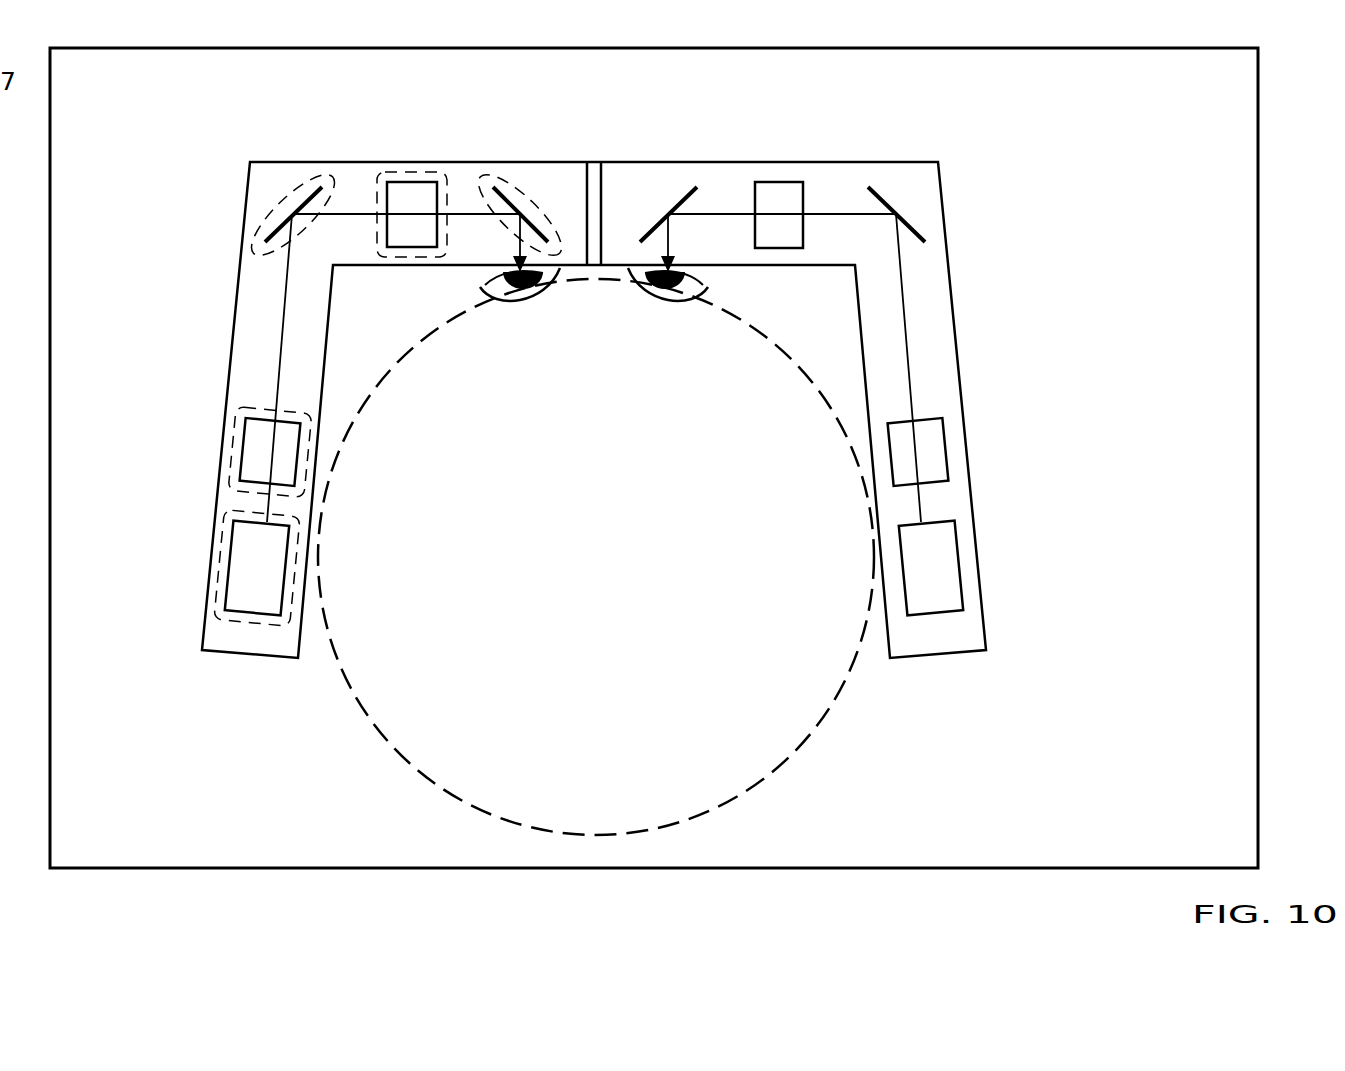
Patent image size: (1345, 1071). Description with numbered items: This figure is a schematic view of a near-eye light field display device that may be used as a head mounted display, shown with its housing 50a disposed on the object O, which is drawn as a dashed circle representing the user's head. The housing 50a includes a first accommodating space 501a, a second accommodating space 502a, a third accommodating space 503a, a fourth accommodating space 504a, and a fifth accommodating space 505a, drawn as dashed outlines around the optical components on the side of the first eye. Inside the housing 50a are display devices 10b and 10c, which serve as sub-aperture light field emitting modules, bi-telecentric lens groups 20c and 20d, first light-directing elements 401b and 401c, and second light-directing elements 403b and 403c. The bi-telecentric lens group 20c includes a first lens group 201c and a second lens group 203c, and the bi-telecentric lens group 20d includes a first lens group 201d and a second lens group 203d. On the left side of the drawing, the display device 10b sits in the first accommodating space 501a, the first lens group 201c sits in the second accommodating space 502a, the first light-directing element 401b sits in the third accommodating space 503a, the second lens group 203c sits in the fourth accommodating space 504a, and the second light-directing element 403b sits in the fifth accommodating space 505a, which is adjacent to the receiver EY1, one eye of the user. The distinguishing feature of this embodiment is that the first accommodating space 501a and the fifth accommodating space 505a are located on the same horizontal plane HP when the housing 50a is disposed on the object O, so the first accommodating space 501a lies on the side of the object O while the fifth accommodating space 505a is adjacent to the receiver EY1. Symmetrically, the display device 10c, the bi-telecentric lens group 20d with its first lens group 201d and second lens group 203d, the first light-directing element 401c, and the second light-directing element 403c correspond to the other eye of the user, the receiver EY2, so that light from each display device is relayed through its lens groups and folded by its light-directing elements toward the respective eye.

The horizontal plane HP is at (1212, 650).
The object O is at (755, 708).
The housing 50a is at (960, 345).
The first light-directing element 401b is at (277, 227).
The third accommodating space 503a is at (253, 247).
The second light-directing element 403b is at (512, 205).
The fifth accommodating space 505a is at (557, 205).
The second light-directing element 403c is at (672, 205).
The first light-directing element 401c is at (915, 230).
The bi-telecentric lens group 20c is at (673, 281).
The bi-telecentric lens group 20d is at (995, 295).
The second lens group 203c is at (408, 205).
The second lens group 203d is at (780, 205).
The fourth accommodating space 504a is at (448, 185).
The first lens group 201c is at (255, 448).
The first lens group 201d is at (933, 448).
The second accommodating space 502a is at (245, 428).
The display device 10b is at (255, 570).
The display device 10c is at (932, 568).
The first accommodating space 501a is at (235, 538).
The receiver EY1 is at (518, 297).
The receiver EY2 is at (663, 297).